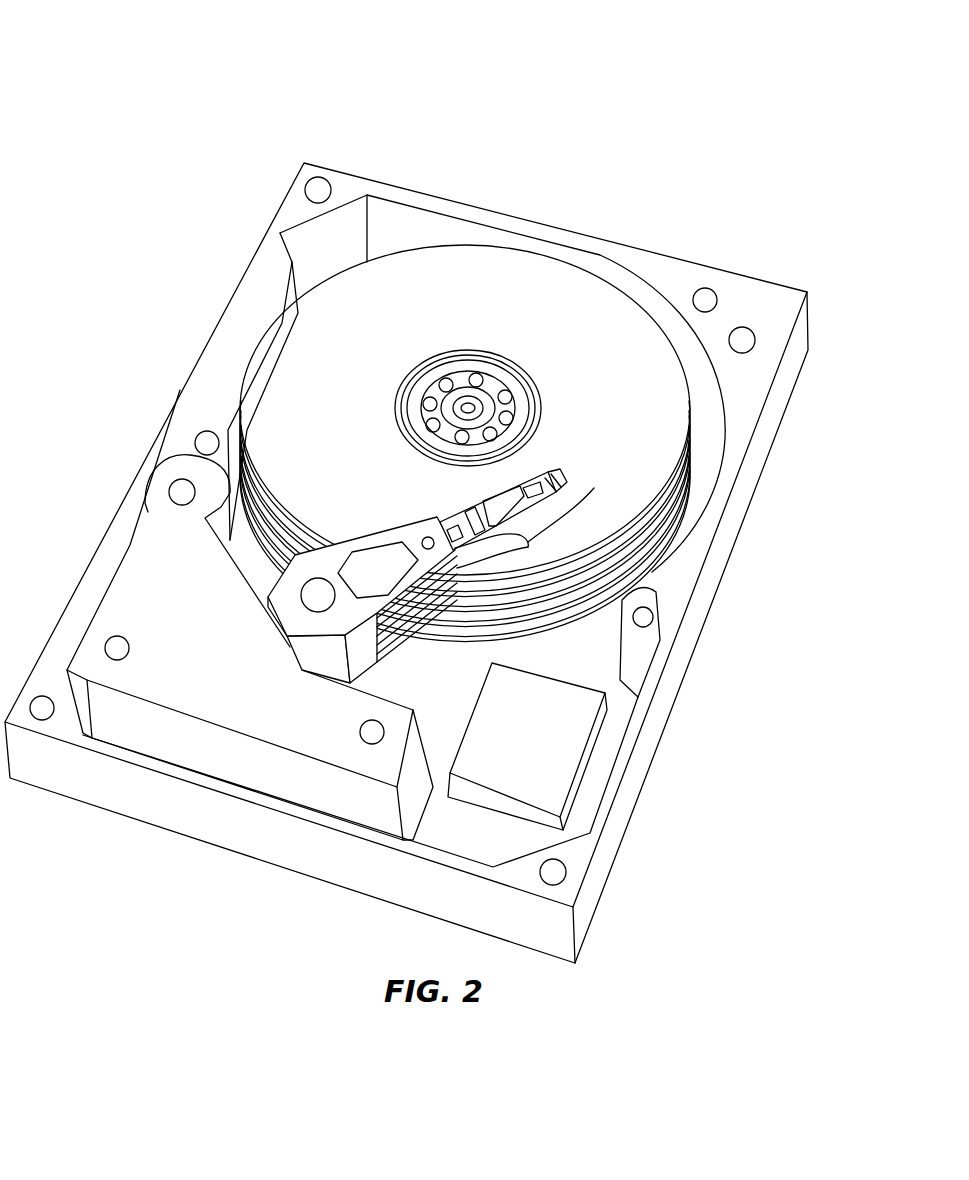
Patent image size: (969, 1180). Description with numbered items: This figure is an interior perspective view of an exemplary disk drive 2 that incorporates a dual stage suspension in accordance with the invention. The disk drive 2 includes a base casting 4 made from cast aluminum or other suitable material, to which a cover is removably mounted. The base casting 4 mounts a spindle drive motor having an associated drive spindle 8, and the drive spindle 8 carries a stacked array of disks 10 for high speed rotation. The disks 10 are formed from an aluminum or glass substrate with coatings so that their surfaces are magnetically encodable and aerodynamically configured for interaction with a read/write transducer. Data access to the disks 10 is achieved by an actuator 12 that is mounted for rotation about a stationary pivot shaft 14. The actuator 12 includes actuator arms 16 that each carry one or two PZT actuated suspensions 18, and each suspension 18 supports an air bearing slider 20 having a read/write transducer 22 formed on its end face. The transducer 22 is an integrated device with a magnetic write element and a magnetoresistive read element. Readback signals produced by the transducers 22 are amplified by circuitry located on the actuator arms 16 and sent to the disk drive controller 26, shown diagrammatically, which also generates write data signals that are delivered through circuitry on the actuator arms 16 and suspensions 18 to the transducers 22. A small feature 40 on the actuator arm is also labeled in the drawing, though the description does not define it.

The disk drive 2 is at (206, 66).
The base casting 4 is at (775, 421).
The drive spindle 8 is at (468, 406).
The disks 10 is at (303, 347).
The actuator 12 is at (307, 652).
The pivot shaft 14 is at (317, 590).
The actuator arms 16 is at (398, 627).
The PZT actuated suspension 18 is at (524, 533).
The air bearing slider 20 is at (566, 452).
The read/write transducer 22 is at (565, 478).
The disk drive controller 26 is at (552, 683).
The arm hole 40 is at (428, 538).